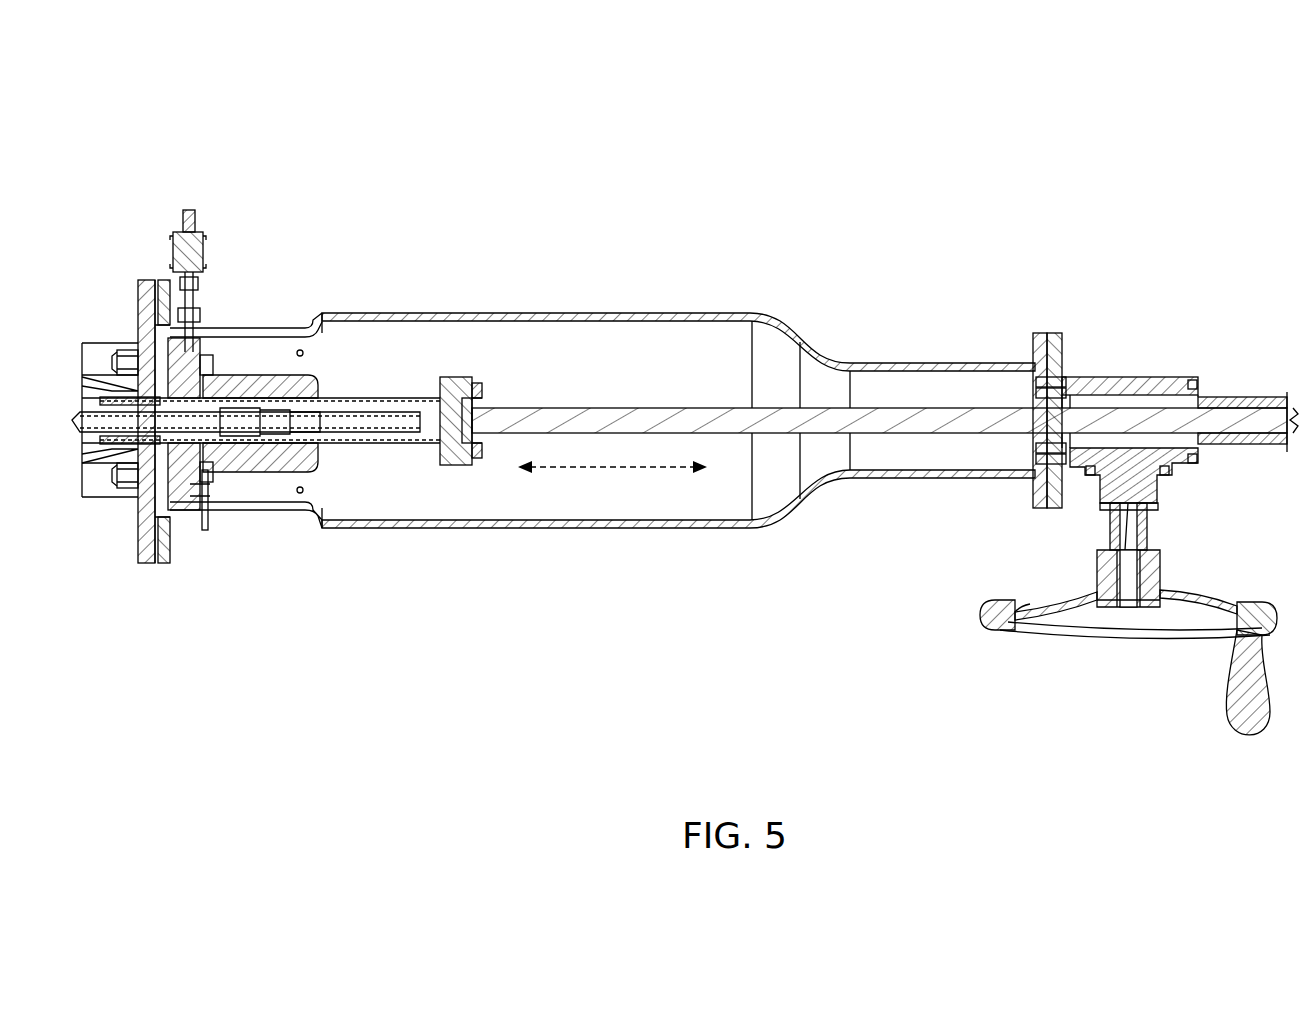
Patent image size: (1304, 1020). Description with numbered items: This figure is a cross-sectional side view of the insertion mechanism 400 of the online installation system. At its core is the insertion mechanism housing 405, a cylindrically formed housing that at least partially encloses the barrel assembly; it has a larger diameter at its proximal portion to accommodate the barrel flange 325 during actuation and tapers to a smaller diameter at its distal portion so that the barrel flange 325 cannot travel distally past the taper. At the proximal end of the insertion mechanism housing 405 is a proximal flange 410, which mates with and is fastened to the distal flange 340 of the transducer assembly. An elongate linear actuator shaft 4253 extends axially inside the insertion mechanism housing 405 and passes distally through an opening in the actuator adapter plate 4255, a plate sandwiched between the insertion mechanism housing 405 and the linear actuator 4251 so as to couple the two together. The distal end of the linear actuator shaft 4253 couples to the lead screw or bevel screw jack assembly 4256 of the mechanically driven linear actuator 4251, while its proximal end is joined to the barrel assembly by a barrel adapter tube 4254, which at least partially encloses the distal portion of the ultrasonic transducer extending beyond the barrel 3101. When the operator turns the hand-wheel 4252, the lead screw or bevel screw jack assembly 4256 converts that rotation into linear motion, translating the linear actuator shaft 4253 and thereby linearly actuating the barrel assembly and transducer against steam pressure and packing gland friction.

The insertion mechanism 400 is at (1170, 153).
The insertion mechanism housing 405 is at (565, 312).
The proximal flange 410 is at (165, 269).
The distal flange 340 is at (133, 567).
The barrel flange 325 is at (178, 500).
The barrel 3101 is at (330, 410).
The linear actuator shaft 4253 is at (633, 404).
The barrel adapter tube 4254 is at (403, 446).
The linear actuator 4251 is at (1202, 368).
The actuator adapter plate 4255 is at (1066, 497).
The lead screw or bevel screw jack assembly 4256 is at (1162, 488).
The hand-wheel 4252 is at (1170, 637).